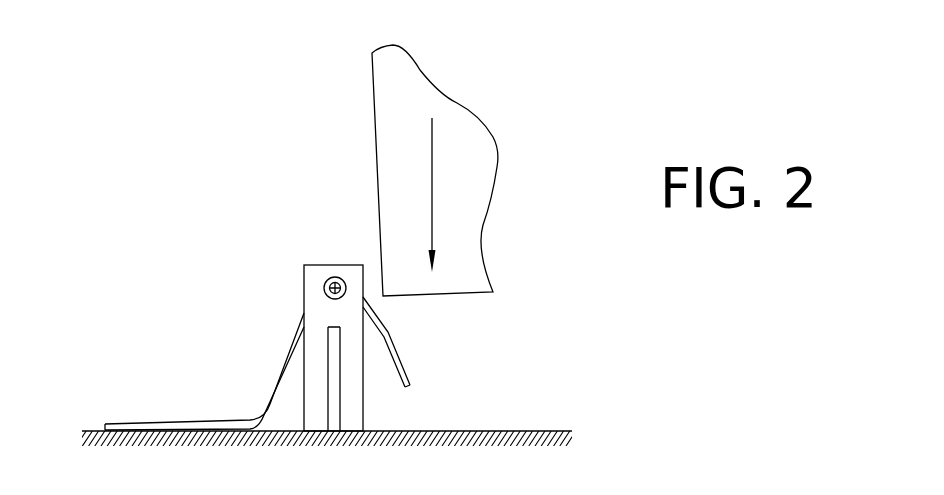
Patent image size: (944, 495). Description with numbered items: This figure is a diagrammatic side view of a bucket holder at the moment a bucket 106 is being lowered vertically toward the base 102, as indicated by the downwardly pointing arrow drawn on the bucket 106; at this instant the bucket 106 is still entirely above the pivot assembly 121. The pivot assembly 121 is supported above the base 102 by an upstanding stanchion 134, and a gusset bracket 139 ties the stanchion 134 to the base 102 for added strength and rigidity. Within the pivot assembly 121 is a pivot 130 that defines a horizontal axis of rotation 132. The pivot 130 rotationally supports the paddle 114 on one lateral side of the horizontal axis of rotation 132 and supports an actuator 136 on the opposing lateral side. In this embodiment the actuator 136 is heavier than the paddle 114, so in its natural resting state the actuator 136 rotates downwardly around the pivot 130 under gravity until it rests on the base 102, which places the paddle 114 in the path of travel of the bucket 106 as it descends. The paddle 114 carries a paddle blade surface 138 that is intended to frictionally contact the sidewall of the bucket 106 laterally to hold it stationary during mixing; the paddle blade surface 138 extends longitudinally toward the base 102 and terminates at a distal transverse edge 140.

The base 102 is at (547, 431).
The bucket 106 is at (402, 92).
The paddle 114 is at (393, 343).
The pivot assembly 121 is at (320, 238).
The pivot 130 is at (323, 324).
The horizontal axis of rotation 132 is at (333, 287).
The stanchion 134 is at (352, 272).
The actuator 136 is at (217, 378).
The paddle blade surface 138 is at (400, 362).
The gusset bracket 139 is at (324, 429).
The distal transverse edge 140 is at (410, 386).